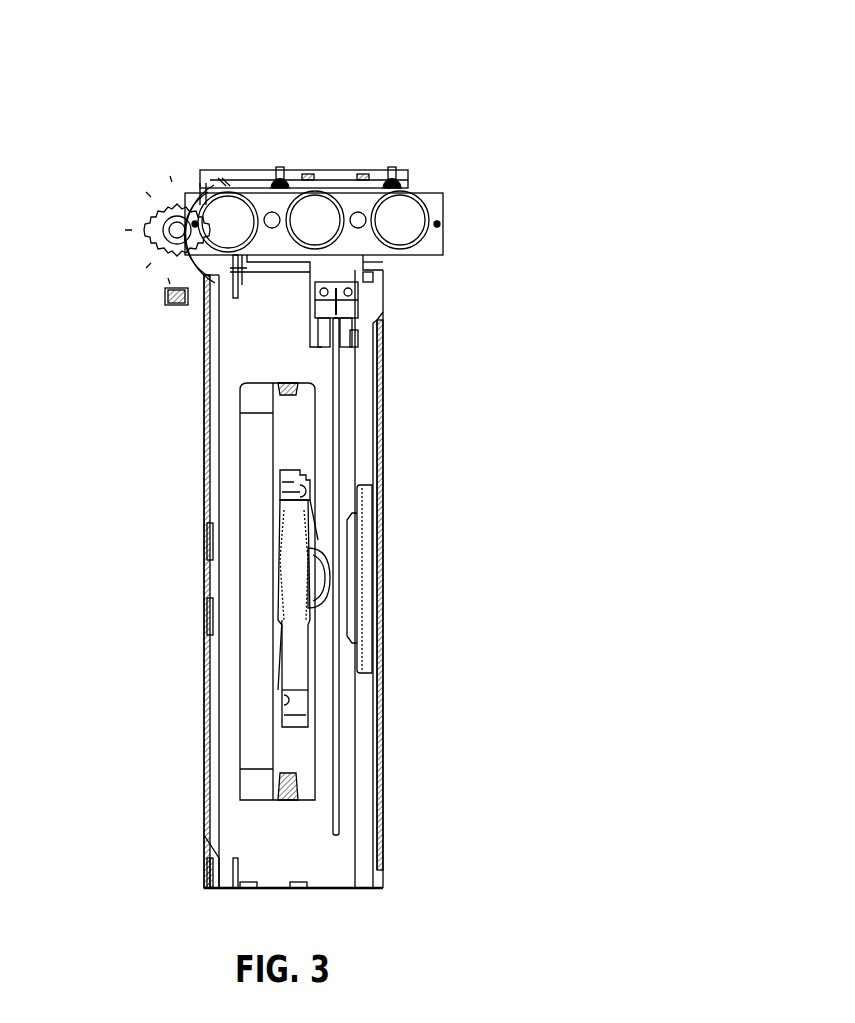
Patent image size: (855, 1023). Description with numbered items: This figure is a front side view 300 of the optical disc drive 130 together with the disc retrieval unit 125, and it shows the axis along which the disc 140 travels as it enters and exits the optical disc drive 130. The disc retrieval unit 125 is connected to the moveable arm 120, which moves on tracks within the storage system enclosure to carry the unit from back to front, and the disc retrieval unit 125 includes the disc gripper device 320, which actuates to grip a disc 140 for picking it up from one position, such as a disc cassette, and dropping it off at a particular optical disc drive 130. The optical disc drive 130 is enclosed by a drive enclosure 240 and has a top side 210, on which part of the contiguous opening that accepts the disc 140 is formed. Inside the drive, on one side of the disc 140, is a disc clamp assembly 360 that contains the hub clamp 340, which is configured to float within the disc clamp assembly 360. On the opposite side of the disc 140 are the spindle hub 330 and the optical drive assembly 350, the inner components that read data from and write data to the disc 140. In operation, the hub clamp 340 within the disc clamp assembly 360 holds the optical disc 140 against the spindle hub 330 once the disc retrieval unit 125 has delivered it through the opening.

The front side view 300 is at (315, 30).
The moveable arm 120 is at (223, 182).
The disc retrieval unit 125 is at (445, 215).
The optical disc drive 130 is at (210, 368).
The optical disc 140 is at (340, 412).
The top side 210 is at (388, 276).
The drive enclosure 240 is at (383, 765).
The disc gripper device 320 is at (360, 350).
The spindle hub 330 is at (320, 580).
The hub clamp 340 is at (352, 565).
The optical drive assembly 350 is at (253, 488).
The disc clamp assembly 360 is at (365, 637).